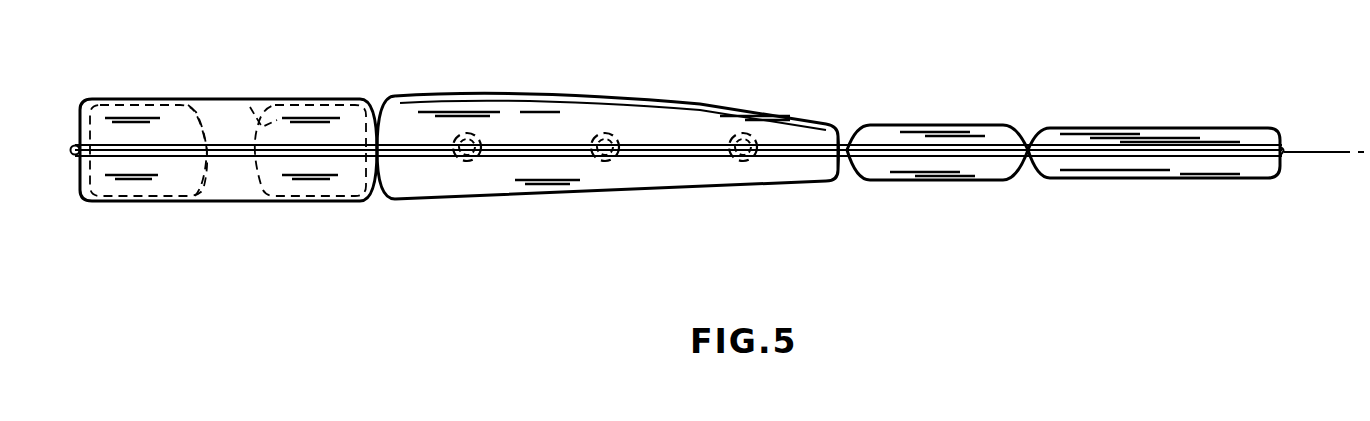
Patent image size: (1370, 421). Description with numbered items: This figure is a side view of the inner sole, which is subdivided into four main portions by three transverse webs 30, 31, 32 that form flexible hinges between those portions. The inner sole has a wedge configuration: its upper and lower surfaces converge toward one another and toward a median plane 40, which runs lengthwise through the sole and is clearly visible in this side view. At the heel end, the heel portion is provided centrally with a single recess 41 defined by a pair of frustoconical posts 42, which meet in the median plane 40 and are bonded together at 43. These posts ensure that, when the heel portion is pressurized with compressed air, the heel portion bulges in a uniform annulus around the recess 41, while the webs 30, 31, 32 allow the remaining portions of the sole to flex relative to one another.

The transverse web 30 is at (379, 155).
The transverse web 31 is at (853, 183).
The transverse web 32 is at (1030, 183).
The median plane 40 is at (1313, 153).
The recess 41 is at (265, 168).
The posts 42 is at (260, 168).
The bond 43 is at (230, 148).